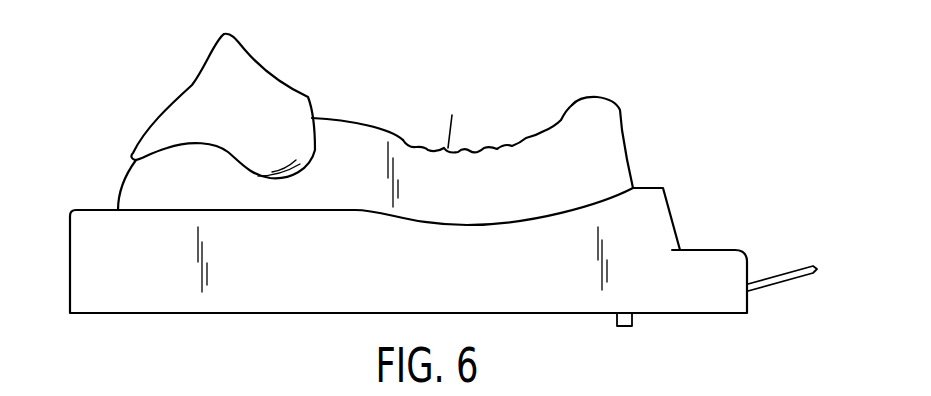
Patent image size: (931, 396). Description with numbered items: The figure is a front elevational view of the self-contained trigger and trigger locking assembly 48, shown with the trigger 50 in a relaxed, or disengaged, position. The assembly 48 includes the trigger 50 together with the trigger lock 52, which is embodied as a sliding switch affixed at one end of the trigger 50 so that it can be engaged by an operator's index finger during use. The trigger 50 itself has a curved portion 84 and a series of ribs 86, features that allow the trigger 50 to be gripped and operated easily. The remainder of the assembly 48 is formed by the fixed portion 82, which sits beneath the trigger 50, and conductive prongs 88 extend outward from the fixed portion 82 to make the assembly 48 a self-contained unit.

The self-contained trigger and trigger locking assembly 48 is at (136, 65).
The trigger 50 is at (575, 107).
The trigger lock 52 is at (248, 48).
The fixed portion 82 is at (68, 265).
The curved portion 84 is at (505, 140).
The ribs 86 is at (495, 147).
The conductive prongs 88 is at (797, 281).